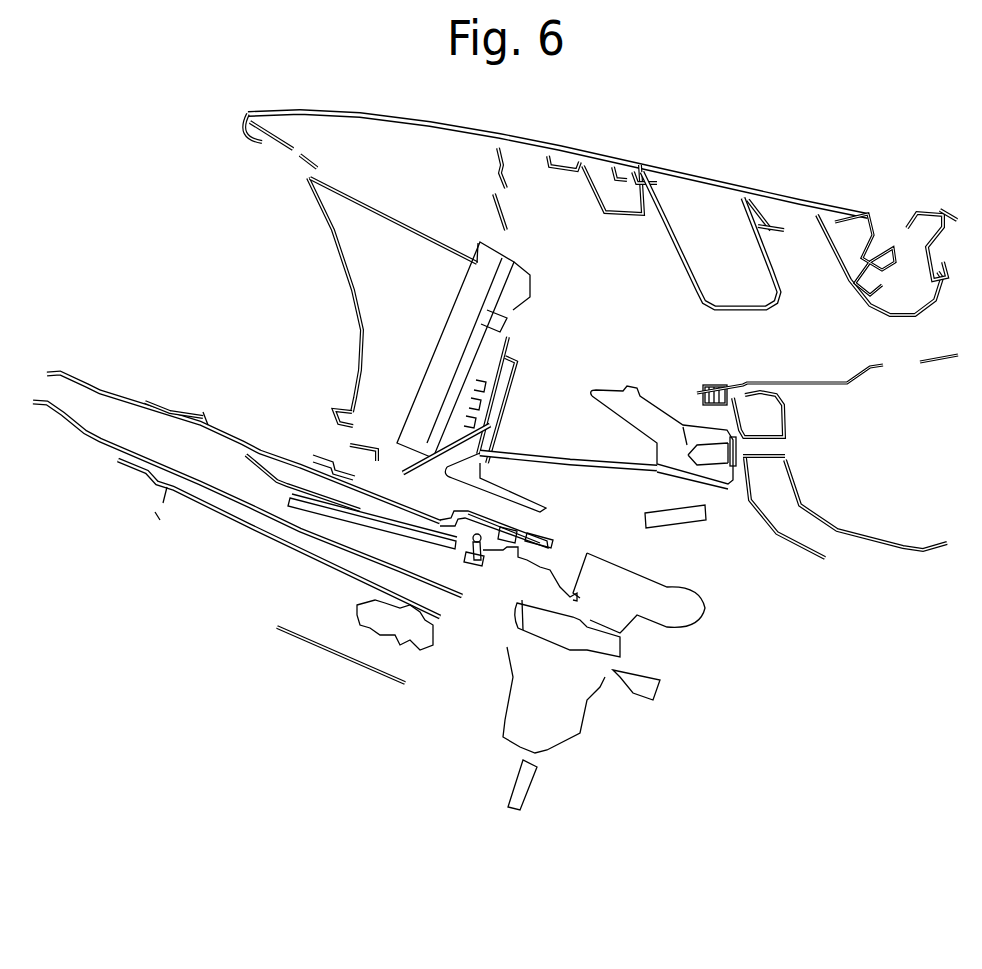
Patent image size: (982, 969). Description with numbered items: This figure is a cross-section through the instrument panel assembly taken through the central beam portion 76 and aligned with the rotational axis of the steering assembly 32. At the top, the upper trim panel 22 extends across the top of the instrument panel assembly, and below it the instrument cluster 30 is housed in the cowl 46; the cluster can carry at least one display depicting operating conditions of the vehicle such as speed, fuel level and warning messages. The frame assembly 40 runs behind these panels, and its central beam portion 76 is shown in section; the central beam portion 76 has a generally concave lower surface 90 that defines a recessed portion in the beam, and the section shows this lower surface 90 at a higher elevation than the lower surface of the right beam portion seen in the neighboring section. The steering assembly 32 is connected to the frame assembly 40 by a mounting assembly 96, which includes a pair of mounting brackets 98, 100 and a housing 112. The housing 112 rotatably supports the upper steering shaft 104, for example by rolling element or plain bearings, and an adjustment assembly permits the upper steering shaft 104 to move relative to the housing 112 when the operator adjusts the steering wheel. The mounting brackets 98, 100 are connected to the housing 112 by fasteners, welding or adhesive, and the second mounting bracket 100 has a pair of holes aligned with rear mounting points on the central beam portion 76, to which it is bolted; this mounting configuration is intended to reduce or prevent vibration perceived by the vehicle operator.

The upper trim panel 22 is at (690, 172).
The cowl 46 is at (690, 268).
The instrument cluster 30 is at (300, 288).
The frame assembly 40 is at (606, 392).
The central beam portion 76 is at (520, 452).
The first mounting bracket 98 is at (350, 456).
The lower surface 90 is at (470, 490).
The second mounting bracket 100 is at (678, 522).
The upper steering shaft 104 is at (88, 437).
The housing 112 is at (300, 638).
The mounting assembly 96 is at (356, 683).
The steering assembly 32 is at (675, 693).